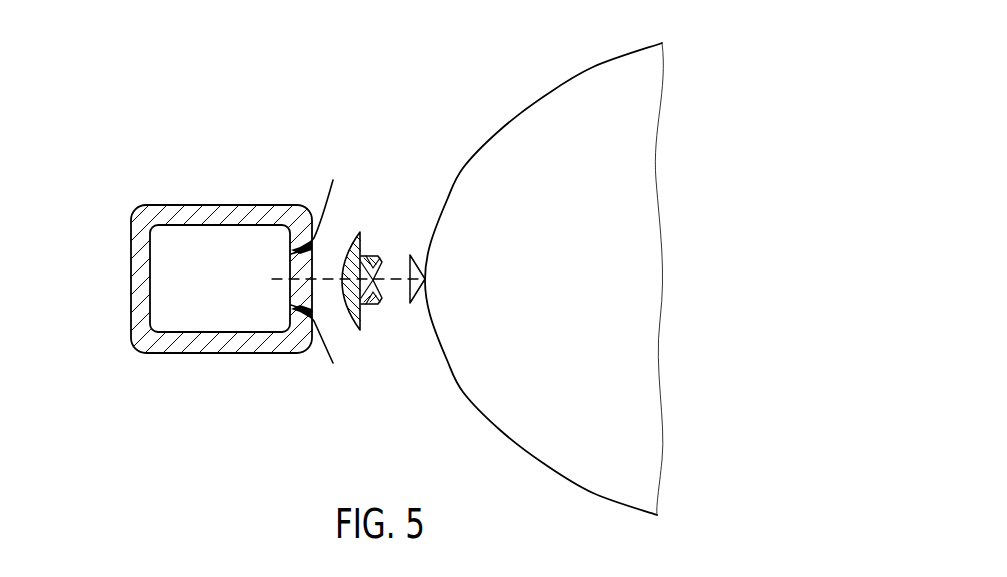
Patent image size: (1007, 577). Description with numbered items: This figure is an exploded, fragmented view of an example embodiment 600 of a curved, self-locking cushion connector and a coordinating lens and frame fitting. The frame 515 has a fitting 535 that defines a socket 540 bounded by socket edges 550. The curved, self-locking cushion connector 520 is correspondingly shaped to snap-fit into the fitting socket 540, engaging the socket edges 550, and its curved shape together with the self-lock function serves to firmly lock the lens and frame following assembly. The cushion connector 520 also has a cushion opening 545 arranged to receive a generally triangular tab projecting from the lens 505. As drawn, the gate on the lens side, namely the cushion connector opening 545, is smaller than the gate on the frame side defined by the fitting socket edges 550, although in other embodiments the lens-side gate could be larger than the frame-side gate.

The lens 505 is at (538, 86).
The frame 515 is at (251, 176).
The curved, self-locking cushion connector 520 is at (381, 236).
The fitting 535 is at (258, 366).
The socket 540 is at (206, 346).
The cushion opening 545 is at (390, 300).
The socket edge 550 is at (325, 272).
The device assembly 600 is at (130, 180).